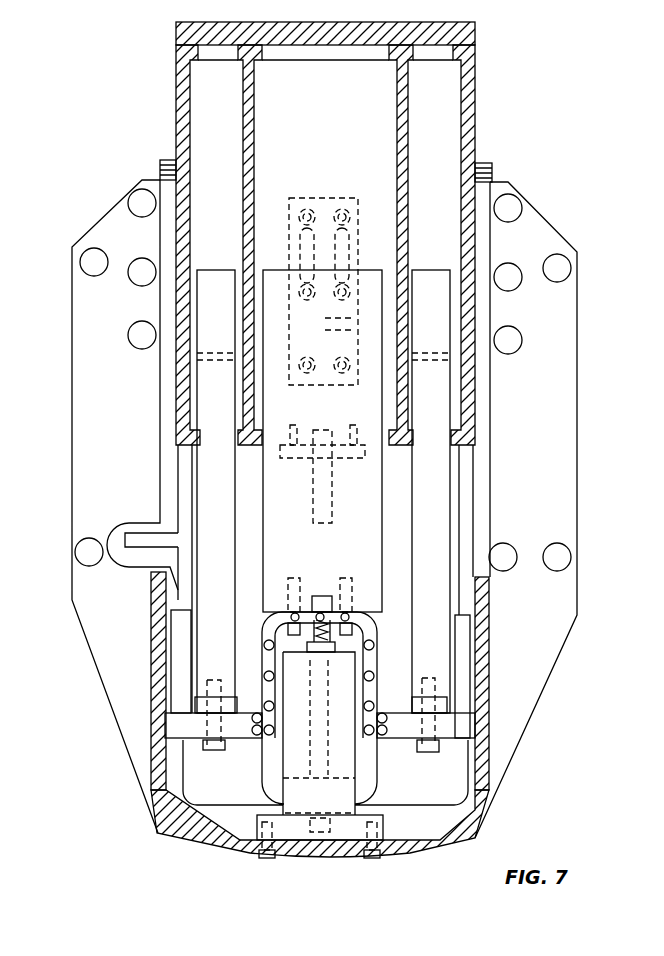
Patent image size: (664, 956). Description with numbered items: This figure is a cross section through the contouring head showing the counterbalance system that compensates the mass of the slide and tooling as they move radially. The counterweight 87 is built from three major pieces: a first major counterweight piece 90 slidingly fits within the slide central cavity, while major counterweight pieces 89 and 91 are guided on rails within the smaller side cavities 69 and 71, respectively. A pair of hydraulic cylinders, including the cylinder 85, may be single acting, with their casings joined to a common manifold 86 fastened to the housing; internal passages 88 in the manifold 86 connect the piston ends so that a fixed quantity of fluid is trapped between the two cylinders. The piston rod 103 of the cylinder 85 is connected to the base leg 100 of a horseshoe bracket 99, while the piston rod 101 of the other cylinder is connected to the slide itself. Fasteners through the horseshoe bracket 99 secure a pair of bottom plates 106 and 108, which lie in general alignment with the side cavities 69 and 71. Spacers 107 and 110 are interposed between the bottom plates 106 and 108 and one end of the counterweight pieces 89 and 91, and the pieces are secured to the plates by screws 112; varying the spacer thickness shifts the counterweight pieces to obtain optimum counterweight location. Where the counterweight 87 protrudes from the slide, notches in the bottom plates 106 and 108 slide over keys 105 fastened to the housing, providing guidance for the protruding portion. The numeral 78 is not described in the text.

The side cavity 69 is at (191, 126).
The side cavity 71 is at (408, 128).
The bolt 78 is at (487, 163).
The hydraulic cylinder 85 is at (348, 763).
The common manifold 86 is at (349, 830).
The counterweight 87 is at (372, 270).
The internal passages 88 is at (307, 827).
The major counterweight piece 89 is at (221, 528).
The first major counterweight piece 90 is at (296, 548).
The major counterweight piece 91 is at (436, 481).
The horseshoe bracket 99 is at (392, 654).
The base leg 100 is at (303, 612).
The piston rod 101 is at (336, 497).
The piston rod 103 is at (365, 627).
The keys 105 is at (177, 639).
The bottom plate 106 is at (165, 721).
The spacer 107 is at (208, 699).
The bottom plate 108 is at (463, 723).
The spacer 110 is at (413, 688).
The screws 112 is at (444, 770).